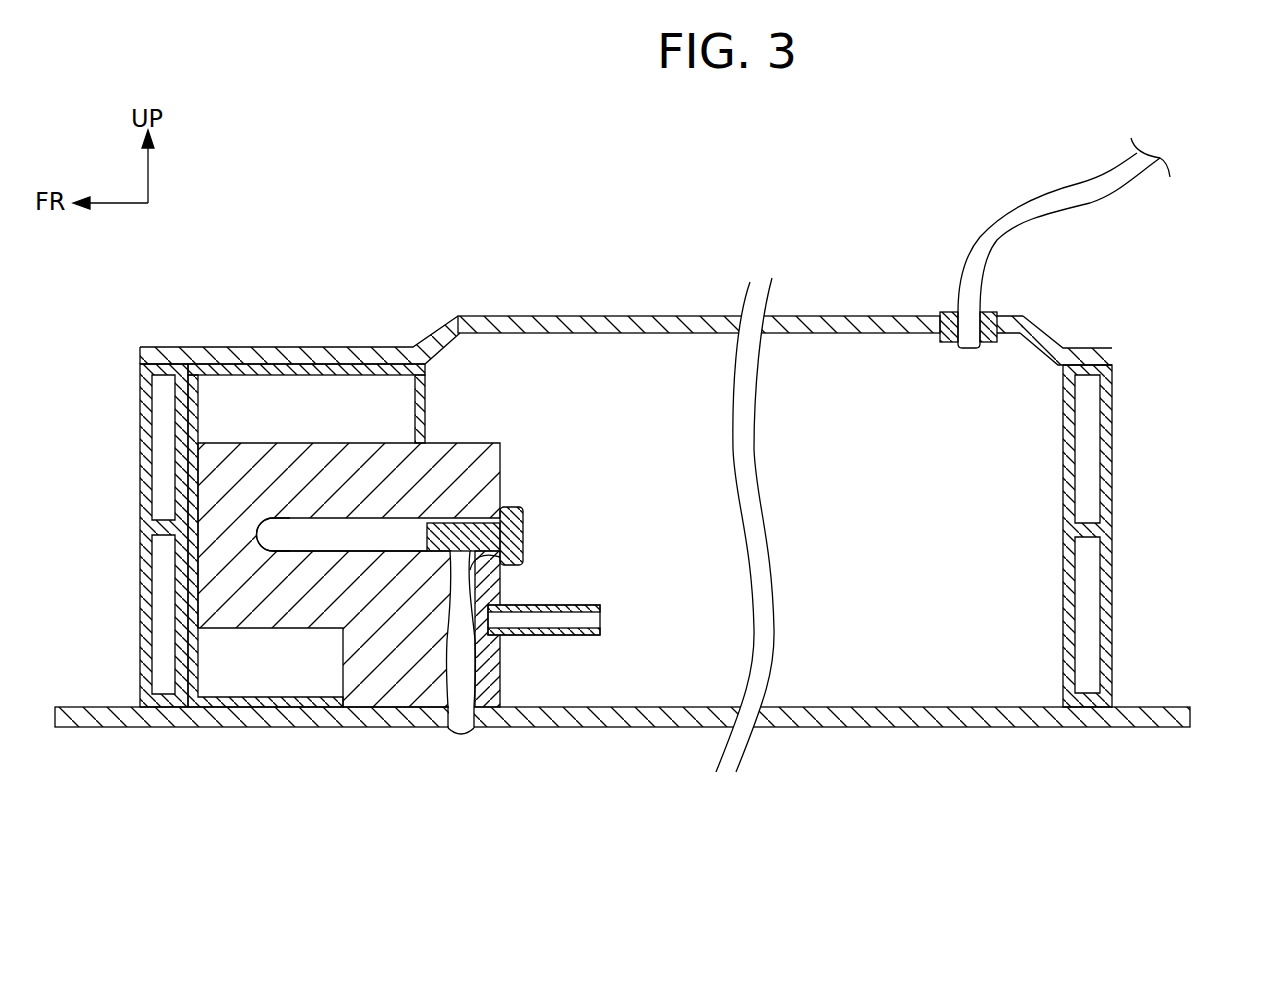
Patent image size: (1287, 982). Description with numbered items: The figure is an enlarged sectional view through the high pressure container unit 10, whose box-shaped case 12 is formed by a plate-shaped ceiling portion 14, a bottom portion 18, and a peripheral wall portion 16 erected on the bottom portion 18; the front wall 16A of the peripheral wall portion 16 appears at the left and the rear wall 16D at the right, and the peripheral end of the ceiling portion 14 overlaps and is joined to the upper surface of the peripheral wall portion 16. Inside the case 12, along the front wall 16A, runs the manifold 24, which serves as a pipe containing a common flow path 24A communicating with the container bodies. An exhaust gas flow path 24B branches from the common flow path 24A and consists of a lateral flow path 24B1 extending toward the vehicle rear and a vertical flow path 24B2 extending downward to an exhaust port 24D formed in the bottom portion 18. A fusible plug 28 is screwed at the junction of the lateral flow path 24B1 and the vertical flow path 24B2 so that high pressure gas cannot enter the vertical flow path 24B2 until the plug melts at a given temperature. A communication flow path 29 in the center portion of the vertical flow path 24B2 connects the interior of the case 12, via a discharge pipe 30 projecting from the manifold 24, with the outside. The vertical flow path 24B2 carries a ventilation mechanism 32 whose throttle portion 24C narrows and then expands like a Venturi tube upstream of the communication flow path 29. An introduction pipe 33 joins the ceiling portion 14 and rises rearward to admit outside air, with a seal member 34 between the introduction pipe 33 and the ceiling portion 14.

The high pressure container unit 10 is at (252, 248).
The case 12 is at (500, 295).
The ceiling portion 14 is at (635, 315).
The peripheral wall portion 16 is at (663, 480).
The front wall 16A is at (140, 422).
The rear wall 16D is at (1113, 422).
The bottom portion 18 is at (636, 728).
The manifold 24 is at (315, 437).
The common flow path 24A is at (268, 518).
The exhaust gas flow path 24B is at (436, 664).
The lateral flow path 24B1 is at (322, 538).
The vertical flow path 24B2 is at (523, 545).
The throttle portion 24C is at (457, 727).
The exhaust port 24D is at (468, 731).
The fusible plug 28 is at (523, 507).
The communication flow path 29 is at (490, 625).
The discharge pipe 30 is at (587, 605).
The ventilation mechanism 32 is at (490, 681).
The introduction pipe 33 is at (985, 230).
The seal member 34 is at (943, 308).